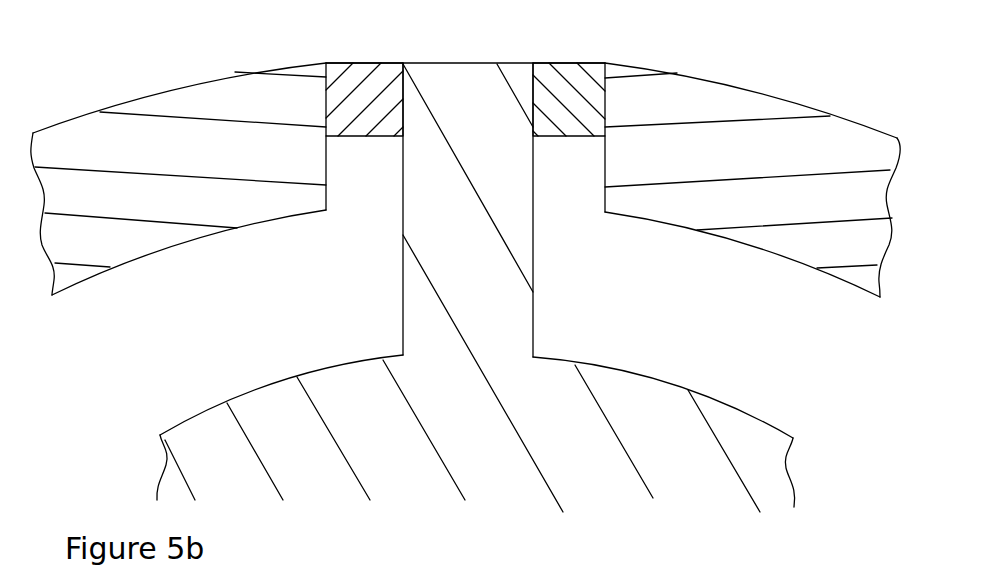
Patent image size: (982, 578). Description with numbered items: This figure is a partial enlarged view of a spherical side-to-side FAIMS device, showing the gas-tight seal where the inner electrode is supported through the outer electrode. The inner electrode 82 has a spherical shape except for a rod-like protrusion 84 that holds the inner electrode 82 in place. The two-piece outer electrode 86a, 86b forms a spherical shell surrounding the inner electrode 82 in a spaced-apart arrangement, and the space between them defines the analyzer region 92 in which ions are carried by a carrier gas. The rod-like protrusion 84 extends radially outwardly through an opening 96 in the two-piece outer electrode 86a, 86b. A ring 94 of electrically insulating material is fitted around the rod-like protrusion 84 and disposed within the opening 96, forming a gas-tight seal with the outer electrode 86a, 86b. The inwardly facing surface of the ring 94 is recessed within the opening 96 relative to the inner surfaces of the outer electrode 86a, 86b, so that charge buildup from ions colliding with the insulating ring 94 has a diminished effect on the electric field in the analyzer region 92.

The inner electrode 82 is at (750, 417).
The rod-like protrusion 84 is at (470, 87).
The outer electrode 86a is at (132, 98).
The outer electrode 86b is at (727, 82).
The analyzer region 92 is at (738, 300).
The ring 94 is at (583, 83).
The opening 96 is at (355, 185).